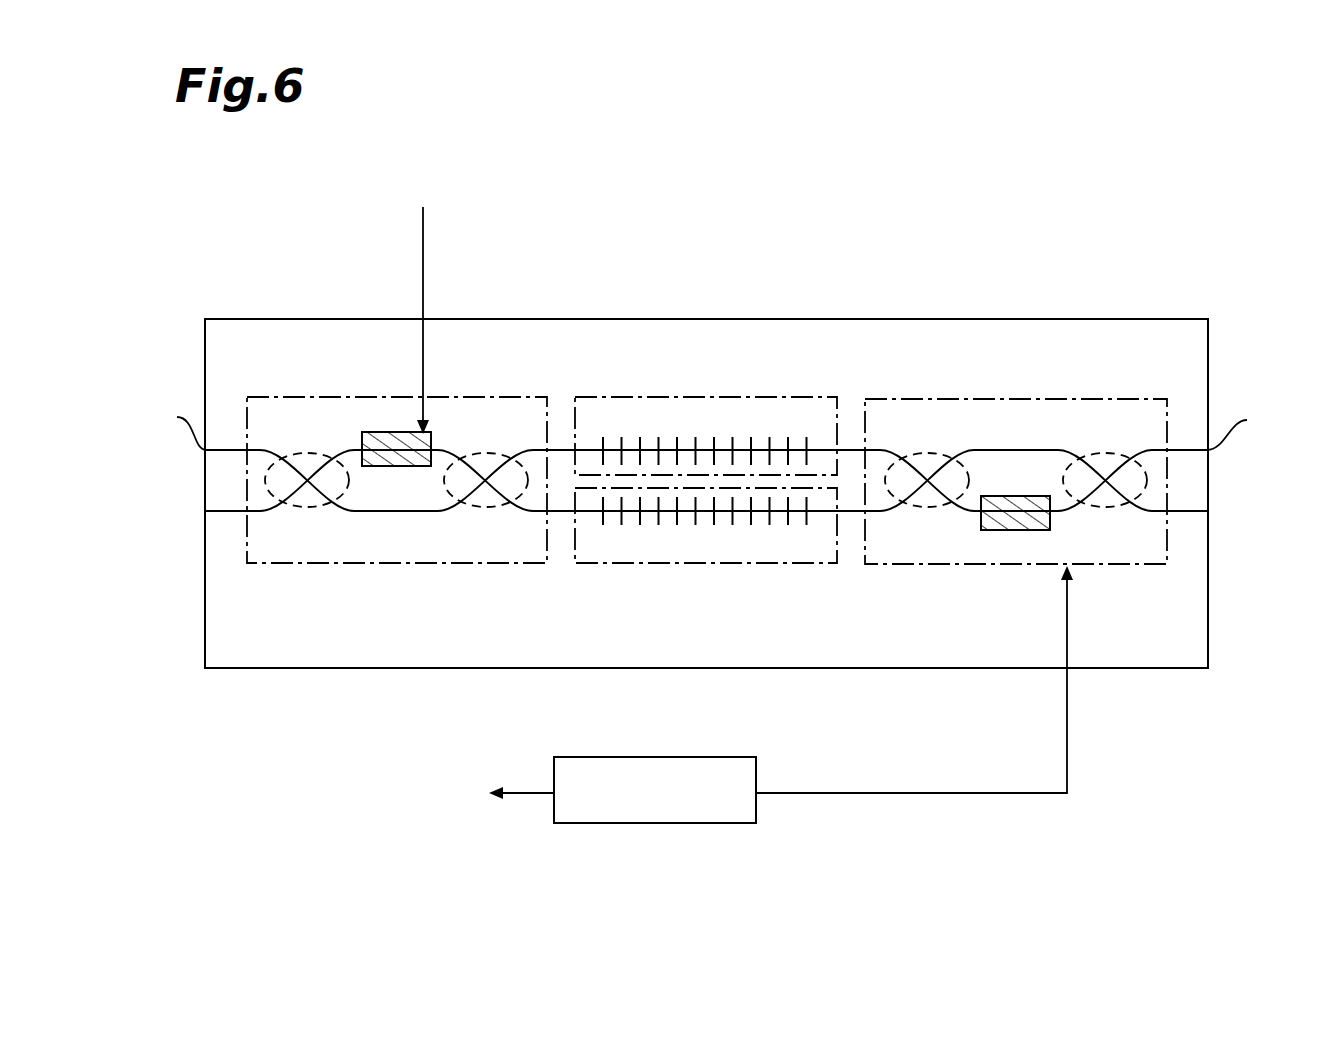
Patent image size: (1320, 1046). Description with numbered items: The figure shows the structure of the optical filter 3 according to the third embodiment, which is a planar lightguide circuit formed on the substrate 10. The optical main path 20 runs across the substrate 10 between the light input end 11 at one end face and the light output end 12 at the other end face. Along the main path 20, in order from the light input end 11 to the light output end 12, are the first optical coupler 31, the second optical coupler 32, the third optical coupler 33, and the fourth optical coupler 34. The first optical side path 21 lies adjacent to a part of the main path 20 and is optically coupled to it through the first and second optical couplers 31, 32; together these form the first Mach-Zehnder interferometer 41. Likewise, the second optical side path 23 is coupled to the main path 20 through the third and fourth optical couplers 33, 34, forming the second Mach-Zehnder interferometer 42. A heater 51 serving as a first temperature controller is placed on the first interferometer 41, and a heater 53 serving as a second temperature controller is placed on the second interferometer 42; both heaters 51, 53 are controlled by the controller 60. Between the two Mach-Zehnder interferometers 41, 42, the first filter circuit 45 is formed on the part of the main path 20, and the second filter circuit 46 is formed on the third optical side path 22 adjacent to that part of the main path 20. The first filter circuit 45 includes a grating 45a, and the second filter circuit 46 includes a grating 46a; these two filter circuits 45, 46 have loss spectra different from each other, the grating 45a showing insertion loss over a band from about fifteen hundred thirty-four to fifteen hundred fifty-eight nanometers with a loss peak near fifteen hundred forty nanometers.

The optical filter 3 is at (903, 170).
The substrate 10 is at (495, 318).
The light input end 11 is at (178, 426).
The light output end 12 is at (1243, 427).
The optical main path 20 is at (851, 449).
The first optical side path 21 is at (393, 513).
The third optical side path 22 is at (846, 513).
The second optical side path 23 is at (968, 513).
The first optical coupler 31 is at (306, 508).
The second optical coupler 32 is at (486, 508).
The third optical coupler 33 is at (914, 508).
The fourth optical coupler 34 is at (1093, 508).
The first Mach-Zehnder interferometer 41 is at (341, 397).
The second Mach-Zehnder interferometer 42 is at (1036, 399).
The first filter circuit 45 is at (728, 397).
The grating 45a is at (668, 443).
The second filter circuit 46 is at (748, 564).
The grating 46a is at (655, 527).
The heater 51 is at (402, 432).
The heater 53 is at (1013, 531).
The controller 60 is at (713, 824).